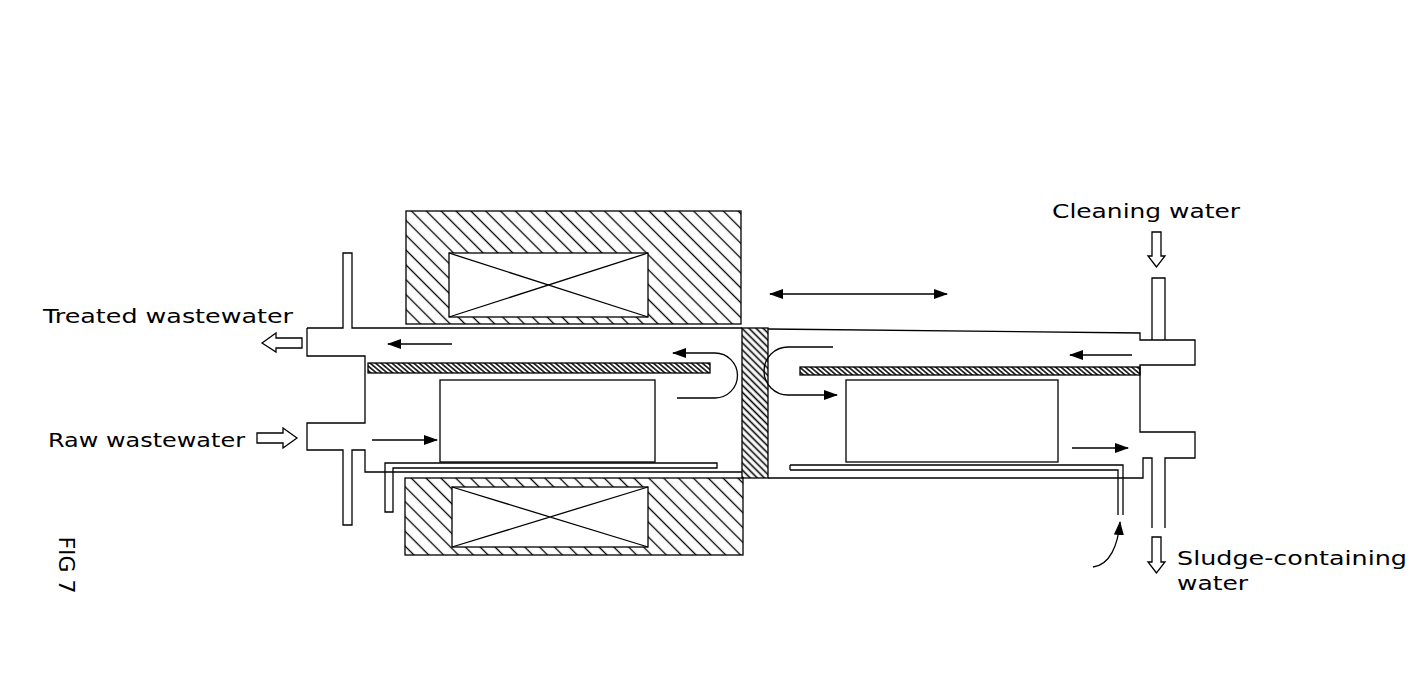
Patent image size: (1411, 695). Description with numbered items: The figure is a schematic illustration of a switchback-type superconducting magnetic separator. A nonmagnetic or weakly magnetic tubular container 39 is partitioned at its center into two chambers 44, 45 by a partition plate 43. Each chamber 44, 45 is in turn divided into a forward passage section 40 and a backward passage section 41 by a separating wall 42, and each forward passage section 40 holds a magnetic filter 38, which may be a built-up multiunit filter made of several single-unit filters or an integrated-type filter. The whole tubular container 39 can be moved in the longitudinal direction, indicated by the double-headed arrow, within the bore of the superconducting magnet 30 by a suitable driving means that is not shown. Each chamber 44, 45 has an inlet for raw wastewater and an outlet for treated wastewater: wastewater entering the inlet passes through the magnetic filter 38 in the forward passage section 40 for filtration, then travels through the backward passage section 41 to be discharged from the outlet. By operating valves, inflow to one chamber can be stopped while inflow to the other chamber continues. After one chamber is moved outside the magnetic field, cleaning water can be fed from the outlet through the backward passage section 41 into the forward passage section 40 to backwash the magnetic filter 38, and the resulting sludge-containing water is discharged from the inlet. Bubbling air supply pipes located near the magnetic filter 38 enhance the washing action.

The superconducting magnet 30 is at (508, 555).
The magnetic filter 38 is at (947, 445).
The tubular container 39 is at (1047, 332).
The forward passage section 40 is at (845, 547).
The backward passage section 41 is at (1008, 283).
The separating wall 42 is at (382, 372).
The partition plate 43 is at (758, 482).
The chamber 44 is at (388, 409).
The chamber 45 is at (1107, 408).